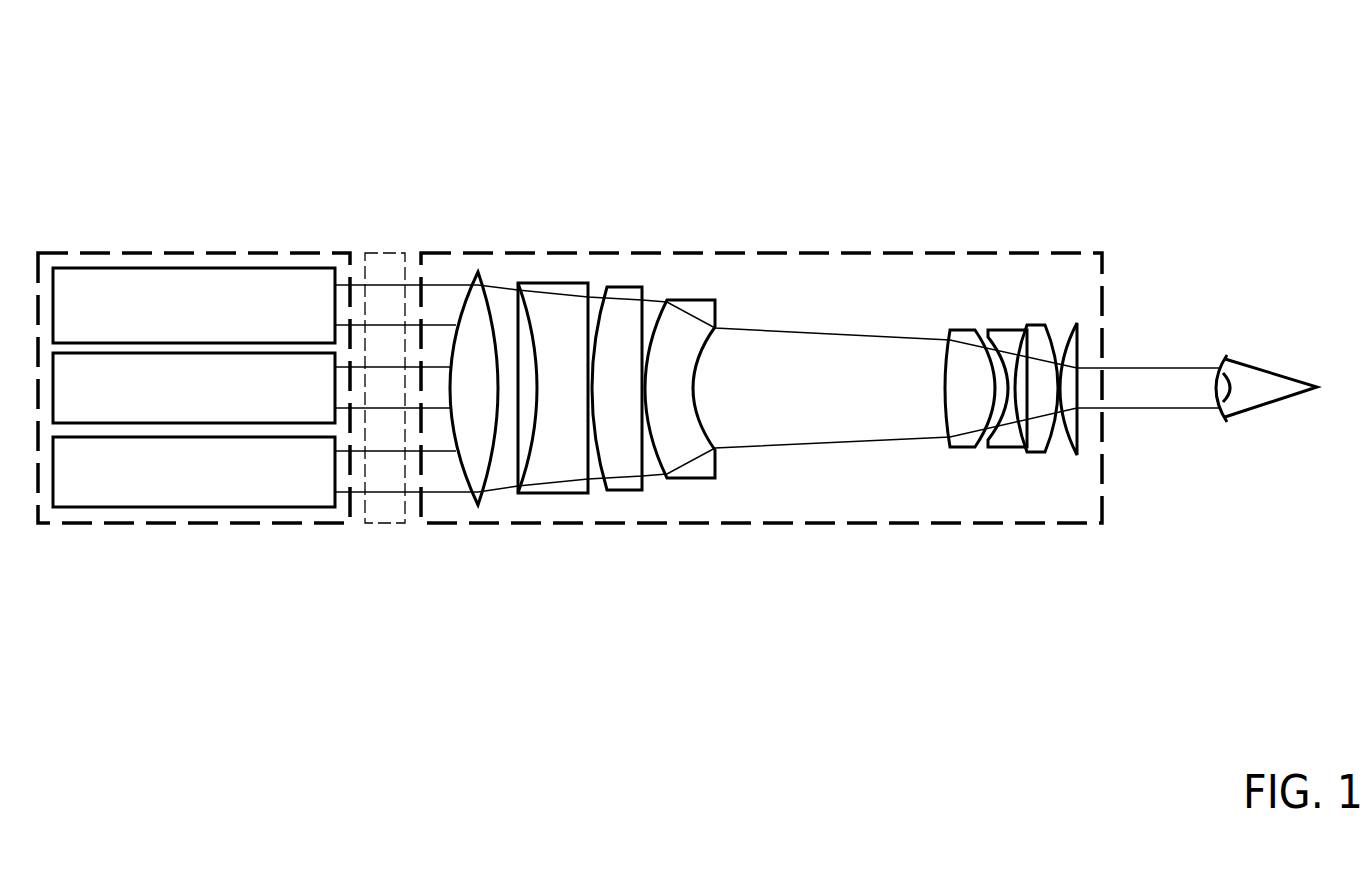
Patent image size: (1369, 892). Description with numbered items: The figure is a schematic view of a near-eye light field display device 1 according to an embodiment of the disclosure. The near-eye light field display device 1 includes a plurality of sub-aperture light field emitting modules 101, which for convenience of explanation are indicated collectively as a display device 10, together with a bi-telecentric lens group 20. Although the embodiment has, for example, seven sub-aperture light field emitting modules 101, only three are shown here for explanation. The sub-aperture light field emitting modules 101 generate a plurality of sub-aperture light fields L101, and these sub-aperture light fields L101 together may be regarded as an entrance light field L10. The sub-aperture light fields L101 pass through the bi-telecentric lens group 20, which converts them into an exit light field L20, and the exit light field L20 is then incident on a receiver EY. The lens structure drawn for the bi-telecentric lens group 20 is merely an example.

The near-eye light field display device 1 is at (57, 92).
The display device 10 is at (133, 250).
The sub-aperture light field emitting module 101 is at (218, 322).
The entrance light field L10 is at (373, 250).
The sub-aperture light field L101 is at (445, 285).
The bi-telecentric lens group 20 is at (927, 250).
The exit light field L20 is at (1160, 367).
The receiver EY is at (1262, 383).